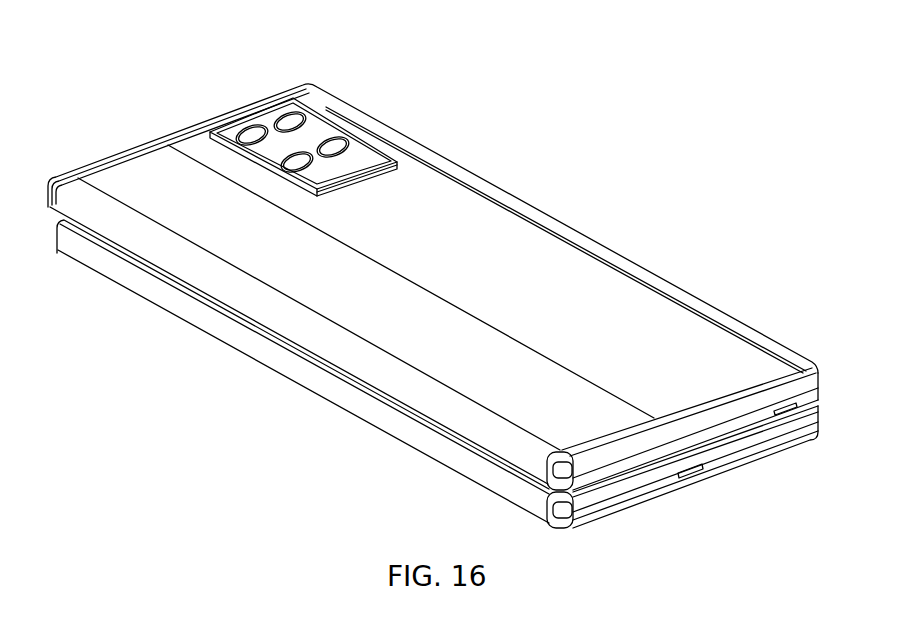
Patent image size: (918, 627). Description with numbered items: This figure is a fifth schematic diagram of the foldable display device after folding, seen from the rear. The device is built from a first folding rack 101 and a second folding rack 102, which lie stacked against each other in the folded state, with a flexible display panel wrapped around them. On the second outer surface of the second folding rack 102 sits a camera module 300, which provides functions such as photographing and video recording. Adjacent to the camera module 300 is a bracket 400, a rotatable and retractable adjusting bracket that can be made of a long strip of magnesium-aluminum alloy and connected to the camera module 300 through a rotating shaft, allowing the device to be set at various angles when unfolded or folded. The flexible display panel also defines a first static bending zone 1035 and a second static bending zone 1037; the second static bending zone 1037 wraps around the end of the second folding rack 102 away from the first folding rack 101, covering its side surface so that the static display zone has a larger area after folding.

The first folding rack 101 is at (627, 493).
The second folding rack 102 is at (722, 415).
The camera module 300 is at (313, 130).
The bracket 400 is at (367, 170).
The first static bending zone 1035 is at (282, 357).
The second static bending zone 1037 is at (262, 262).